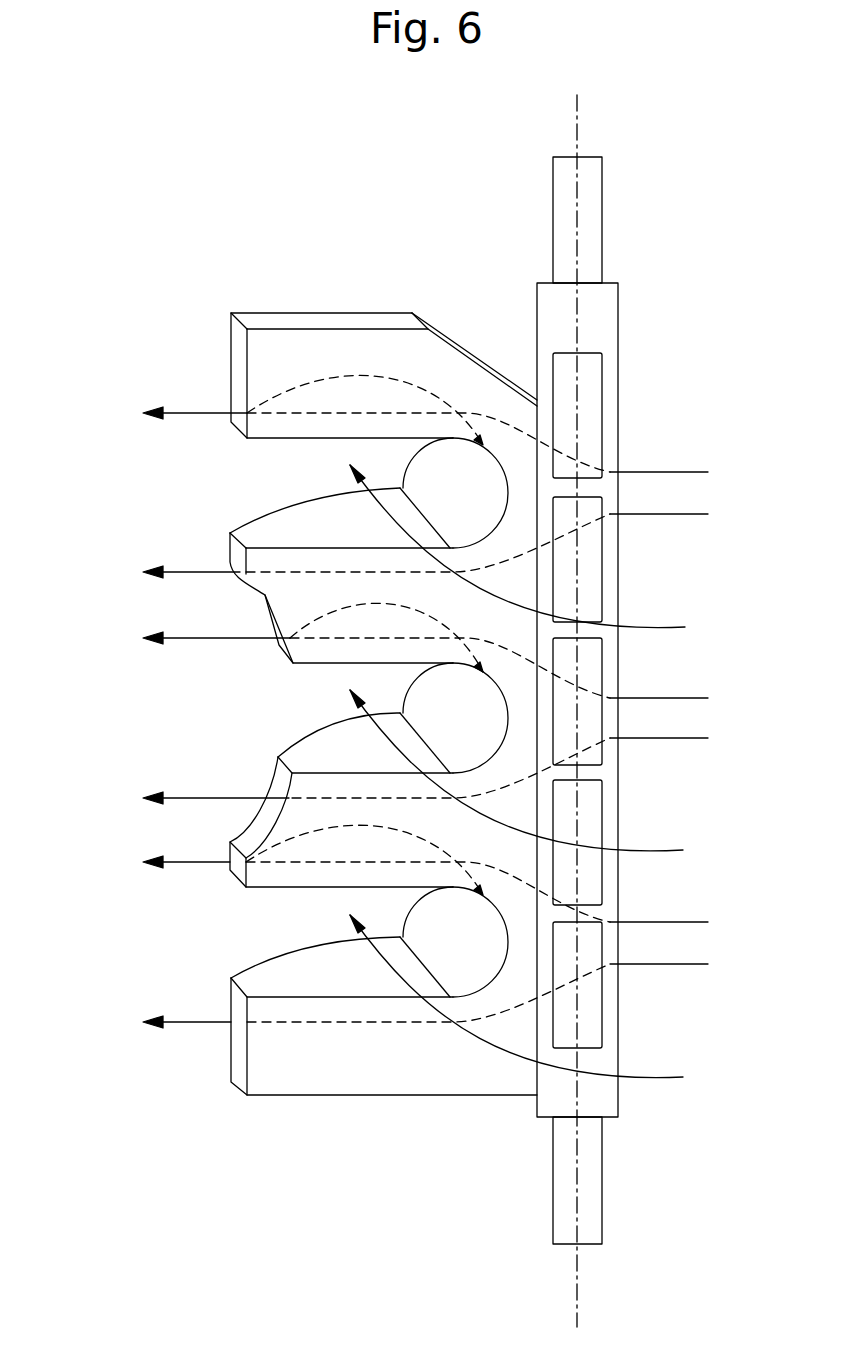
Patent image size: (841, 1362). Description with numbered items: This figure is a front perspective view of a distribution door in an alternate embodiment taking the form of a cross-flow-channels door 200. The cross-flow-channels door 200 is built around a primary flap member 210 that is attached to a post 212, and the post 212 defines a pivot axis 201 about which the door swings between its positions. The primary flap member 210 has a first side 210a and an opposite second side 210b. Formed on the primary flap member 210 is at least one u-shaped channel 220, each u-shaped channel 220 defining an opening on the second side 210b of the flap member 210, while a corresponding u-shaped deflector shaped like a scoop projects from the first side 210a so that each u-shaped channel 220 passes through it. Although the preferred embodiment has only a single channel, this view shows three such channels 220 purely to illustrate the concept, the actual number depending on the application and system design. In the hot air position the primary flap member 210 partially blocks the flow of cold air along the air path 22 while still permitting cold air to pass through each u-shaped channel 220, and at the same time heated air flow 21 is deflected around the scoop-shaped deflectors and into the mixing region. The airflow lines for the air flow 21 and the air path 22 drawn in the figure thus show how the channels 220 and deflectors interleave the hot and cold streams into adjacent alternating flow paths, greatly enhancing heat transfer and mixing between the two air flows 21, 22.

The cross-flow-channels door 200 is at (128, 330).
The pivot axis 201 is at (578, 118).
The air flow 21 is at (673, 921).
The air path 22 is at (655, 1076).
The primary flap member 210 is at (332, 669).
The first side 210a is at (270, 313).
The second side 210b is at (372, 329).
The post 212 is at (596, 193).
The u-shaped channel 220 is at (252, 468).